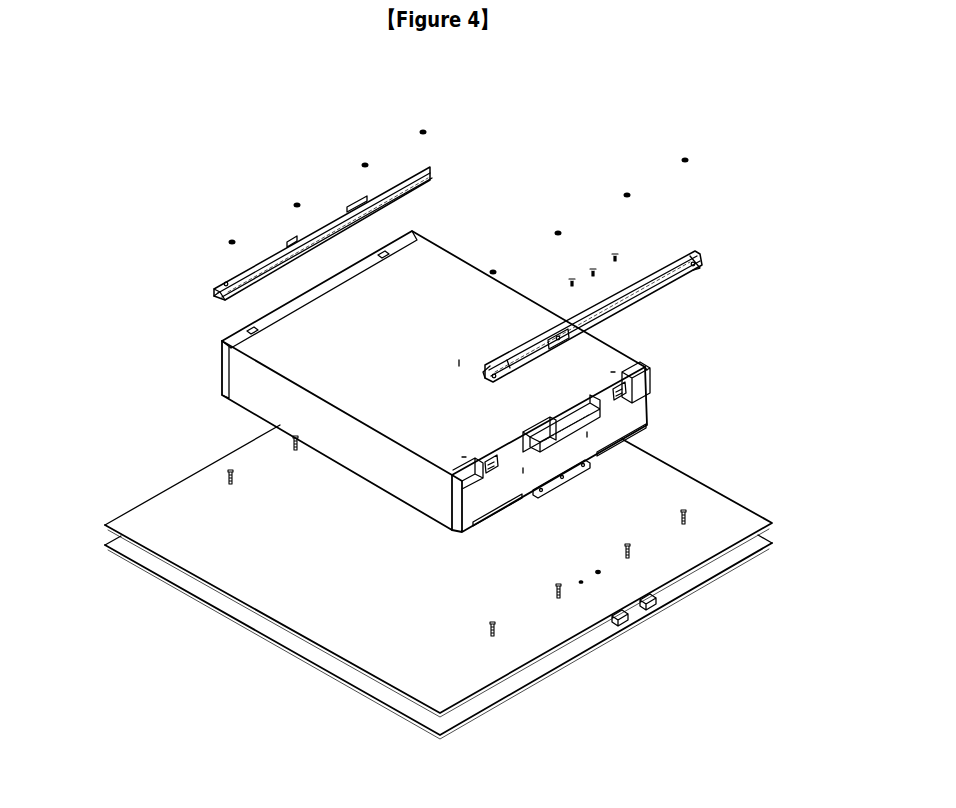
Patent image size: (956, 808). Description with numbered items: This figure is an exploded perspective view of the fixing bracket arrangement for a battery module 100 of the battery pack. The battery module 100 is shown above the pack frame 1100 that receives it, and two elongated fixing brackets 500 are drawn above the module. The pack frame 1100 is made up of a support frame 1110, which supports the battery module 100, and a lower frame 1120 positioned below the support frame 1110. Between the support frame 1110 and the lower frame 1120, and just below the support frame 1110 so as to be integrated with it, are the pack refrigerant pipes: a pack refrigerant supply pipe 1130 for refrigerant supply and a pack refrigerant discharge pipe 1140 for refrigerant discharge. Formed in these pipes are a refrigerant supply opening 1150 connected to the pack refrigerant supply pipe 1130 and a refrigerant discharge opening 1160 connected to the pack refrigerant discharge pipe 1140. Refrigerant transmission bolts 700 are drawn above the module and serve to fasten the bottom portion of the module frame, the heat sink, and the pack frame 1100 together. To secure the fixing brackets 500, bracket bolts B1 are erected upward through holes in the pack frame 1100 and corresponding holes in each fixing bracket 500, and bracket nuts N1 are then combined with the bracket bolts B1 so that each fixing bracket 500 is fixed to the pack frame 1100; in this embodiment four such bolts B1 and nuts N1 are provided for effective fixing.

The battery module 100 is at (433, 262).
The fixing bracket 500 is at (430, 168).
The refrigerant transmission bolt 700 is at (615, 254).
The bracket nut N1 is at (686, 158).
The bracket bolt B1 is at (686, 510).
The pack frame 1100 is at (434, 582).
The support frame 1110 is at (297, 618).
The lower frame 1120 is at (313, 662).
The pack refrigerant supply pipe 1130 is at (652, 604).
The pack refrigerant discharge pipe 1140 is at (620, 620).
The refrigerant supply opening 1150 is at (601, 572).
The refrigerant discharge opening 1160 is at (581, 585).